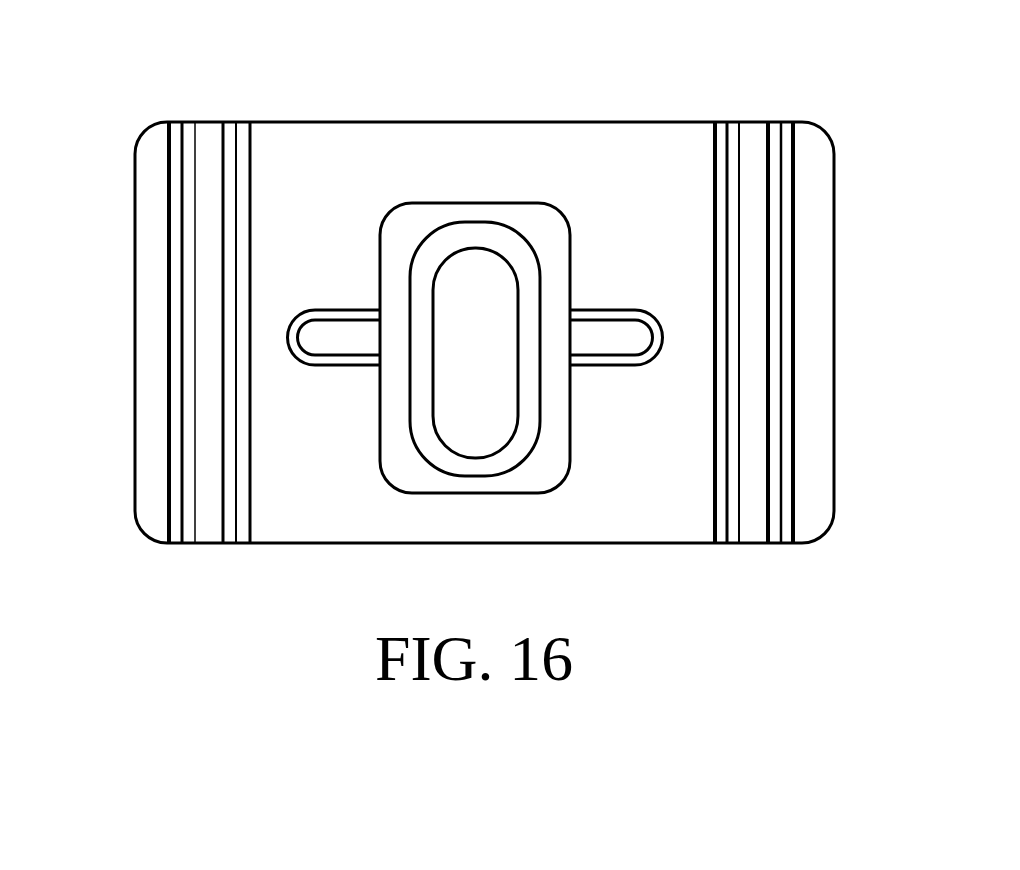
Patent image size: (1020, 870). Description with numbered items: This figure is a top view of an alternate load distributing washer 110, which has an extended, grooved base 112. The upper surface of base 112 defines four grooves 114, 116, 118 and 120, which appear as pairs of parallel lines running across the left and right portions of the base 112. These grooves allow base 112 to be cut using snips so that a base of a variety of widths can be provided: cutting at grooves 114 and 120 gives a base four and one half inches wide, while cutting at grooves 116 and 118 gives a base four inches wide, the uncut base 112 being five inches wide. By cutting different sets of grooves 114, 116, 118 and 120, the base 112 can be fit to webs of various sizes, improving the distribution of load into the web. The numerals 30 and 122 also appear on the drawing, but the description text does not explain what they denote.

The closure assembly 30 is at (471, 273).
The load distributing washer 110 is at (674, 85).
The base 112 is at (152, 160).
The groove 114 is at (175, 460).
The groove 116 is at (238, 488).
The groove 118 is at (720, 493).
The groove 120 is at (788, 473).
The boss 122 is at (343, 216).